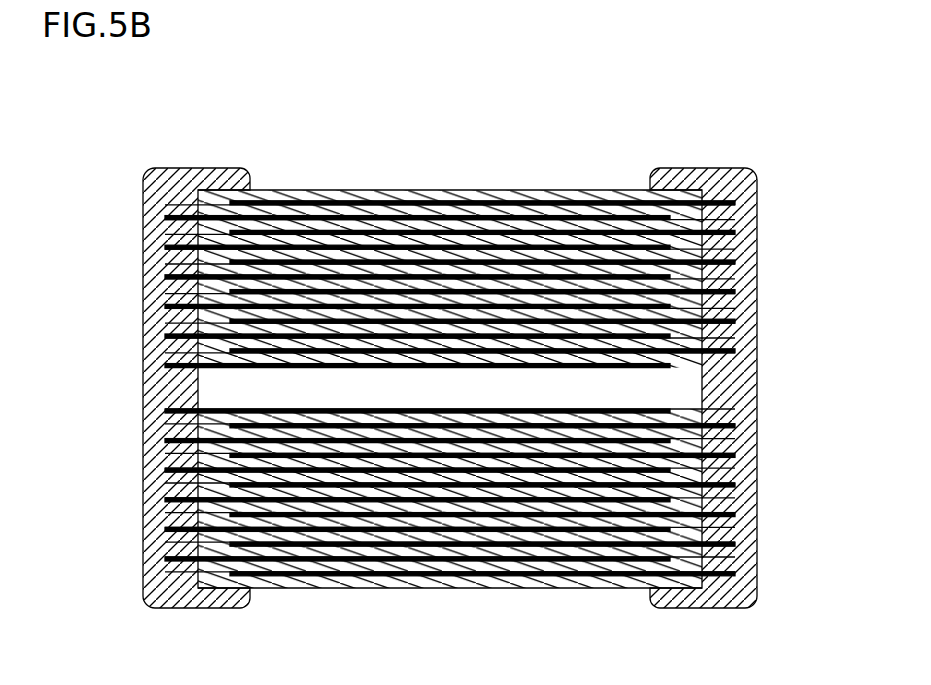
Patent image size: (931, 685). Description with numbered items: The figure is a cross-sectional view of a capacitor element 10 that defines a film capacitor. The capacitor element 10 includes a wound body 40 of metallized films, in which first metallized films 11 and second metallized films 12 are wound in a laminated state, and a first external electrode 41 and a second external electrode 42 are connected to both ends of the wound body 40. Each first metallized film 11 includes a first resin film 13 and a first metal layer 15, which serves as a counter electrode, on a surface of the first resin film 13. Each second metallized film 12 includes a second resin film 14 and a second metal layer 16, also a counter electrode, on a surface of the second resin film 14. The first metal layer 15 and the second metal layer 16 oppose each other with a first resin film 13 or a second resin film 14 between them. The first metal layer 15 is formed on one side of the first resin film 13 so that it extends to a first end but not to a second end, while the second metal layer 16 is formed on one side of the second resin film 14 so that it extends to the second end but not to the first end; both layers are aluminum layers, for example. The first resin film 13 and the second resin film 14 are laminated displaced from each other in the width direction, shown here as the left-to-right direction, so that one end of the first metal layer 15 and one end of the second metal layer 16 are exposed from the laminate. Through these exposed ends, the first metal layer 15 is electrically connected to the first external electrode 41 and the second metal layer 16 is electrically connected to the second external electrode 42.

The capacitor element 10 is at (118, 146).
The first metallized film 11 is at (362, 121).
The second metallized film 12 is at (612, 121).
The first resin film 13 is at (327, 236).
The second resin film 14 is at (565, 215).
The first metal layer 15 is at (240, 230).
The second metal layer 16 is at (641, 235).
The wound body 40 is at (422, 588).
The first external electrode 41 is at (150, 247).
The second external electrode 42 is at (745, 247).